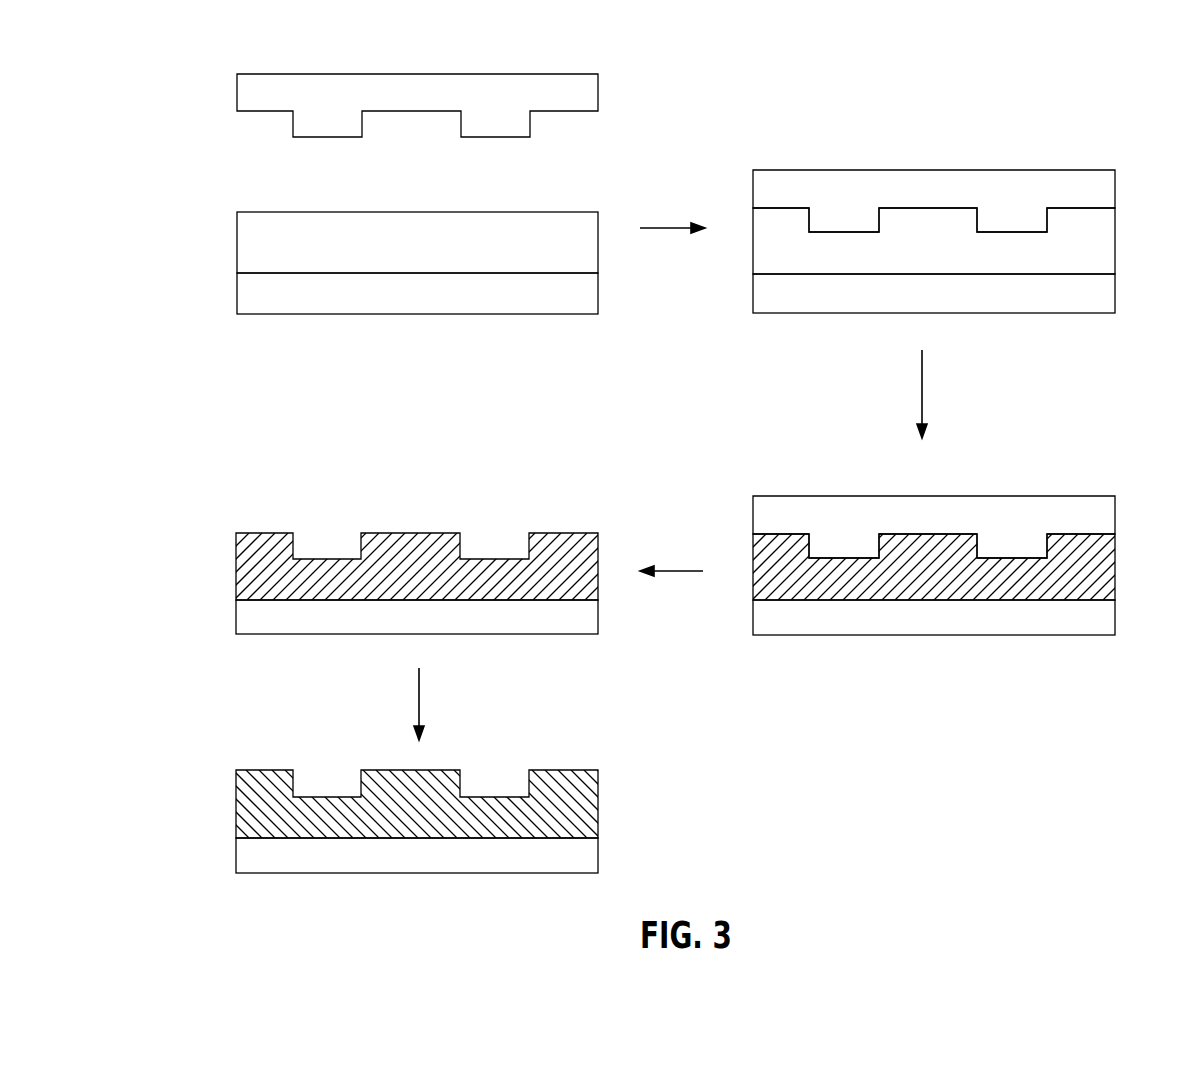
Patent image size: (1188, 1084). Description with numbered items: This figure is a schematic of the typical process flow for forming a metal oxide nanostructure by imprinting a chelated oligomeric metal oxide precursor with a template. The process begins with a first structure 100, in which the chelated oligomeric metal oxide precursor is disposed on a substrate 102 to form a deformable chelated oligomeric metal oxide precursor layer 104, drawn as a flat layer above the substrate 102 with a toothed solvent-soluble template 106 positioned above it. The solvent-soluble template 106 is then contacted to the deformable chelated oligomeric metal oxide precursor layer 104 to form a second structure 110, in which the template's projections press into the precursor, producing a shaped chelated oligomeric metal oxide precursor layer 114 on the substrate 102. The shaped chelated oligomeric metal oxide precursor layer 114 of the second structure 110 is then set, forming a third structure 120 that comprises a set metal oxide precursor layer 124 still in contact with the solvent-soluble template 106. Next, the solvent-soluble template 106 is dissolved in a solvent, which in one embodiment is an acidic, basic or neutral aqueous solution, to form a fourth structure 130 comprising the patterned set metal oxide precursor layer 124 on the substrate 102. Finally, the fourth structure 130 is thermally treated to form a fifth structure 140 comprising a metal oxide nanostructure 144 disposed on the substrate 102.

The first structure 100 is at (240, 186).
The substrate 102 is at (413, 293).
The deformable chelated oligomeric metal oxide precursor layer 104 is at (570, 233).
The solvent-soluble template 106 is at (395, 98).
The second structure 110 is at (761, 148).
The shaped chelated oligomeric metal oxide precursor layer 114 is at (1090, 227).
The third structure 120 is at (761, 458).
The set metal oxide precursor layer 124 is at (1008, 568).
The fourth structure 130 is at (240, 498).
The fifth structure 140 is at (240, 748).
The metal oxide nanostructure 144 is at (557, 805).